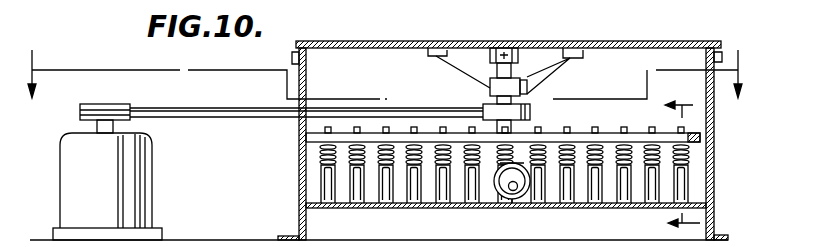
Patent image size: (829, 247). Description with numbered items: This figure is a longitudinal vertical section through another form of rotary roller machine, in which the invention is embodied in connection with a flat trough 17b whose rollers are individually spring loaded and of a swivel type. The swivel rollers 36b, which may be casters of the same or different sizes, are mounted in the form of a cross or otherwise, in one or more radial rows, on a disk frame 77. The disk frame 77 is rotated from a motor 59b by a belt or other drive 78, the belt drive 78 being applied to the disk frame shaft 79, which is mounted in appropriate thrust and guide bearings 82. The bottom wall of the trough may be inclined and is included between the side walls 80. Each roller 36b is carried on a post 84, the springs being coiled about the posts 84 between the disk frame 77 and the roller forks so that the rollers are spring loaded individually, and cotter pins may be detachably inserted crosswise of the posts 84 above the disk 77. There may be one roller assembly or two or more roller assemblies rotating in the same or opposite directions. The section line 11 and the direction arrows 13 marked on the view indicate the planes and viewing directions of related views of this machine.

The section line 11- 11 is at (387, 65).
The direction arrows 13 is at (671, 156).
The flat trough 17b is at (556, 208).
The rollers 36b is at (472, 195).
The motor 59b is at (147, 181).
The disk frame 77 is at (578, 133).
The belt drive 78 is at (265, 118).
The disk frame shaft 79 is at (515, 101).
The side walls 80 is at (299, 173).
The thrust and guide bearings 82 is at (490, 86).
The posts 84 is at (563, 129).